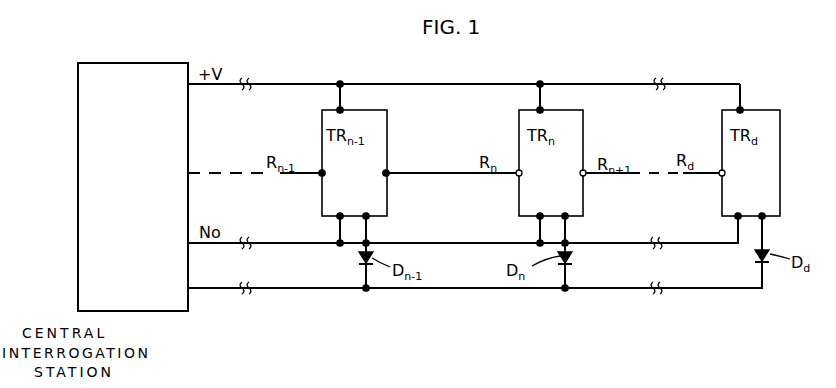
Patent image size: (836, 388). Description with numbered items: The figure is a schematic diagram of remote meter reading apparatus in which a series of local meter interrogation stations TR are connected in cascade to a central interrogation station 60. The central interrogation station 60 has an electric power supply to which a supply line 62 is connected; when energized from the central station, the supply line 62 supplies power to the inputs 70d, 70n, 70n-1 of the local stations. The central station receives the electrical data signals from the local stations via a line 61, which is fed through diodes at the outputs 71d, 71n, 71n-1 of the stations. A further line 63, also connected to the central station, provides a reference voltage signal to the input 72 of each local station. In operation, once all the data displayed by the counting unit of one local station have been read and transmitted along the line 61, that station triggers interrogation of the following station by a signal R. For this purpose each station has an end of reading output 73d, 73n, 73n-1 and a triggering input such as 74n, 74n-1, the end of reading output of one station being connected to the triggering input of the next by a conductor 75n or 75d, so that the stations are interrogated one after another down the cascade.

The central interrogation station 60 is at (147, 218).
The line 61 is at (210, 290).
The supply line 62 is at (262, 79).
The line 63 is at (250, 243).
The input 70n-1 is at (343, 98).
The input 70n is at (544, 95).
The input 70d is at (744, 95).
The output 71n-1 is at (368, 232).
The output 71n is at (567, 232).
The output 71d is at (765, 236).
The input 72 is at (340, 228).
The end of reading output 73n-1 is at (321, 168).
The end of reading output 73n is at (519, 168).
The end of reading output 73d is at (722, 168).
The triggering input 74n-1 is at (305, 176).
The triggering input 74n is at (585, 168).
The conductor 75n is at (405, 176).
The conductor 75d is at (705, 178).